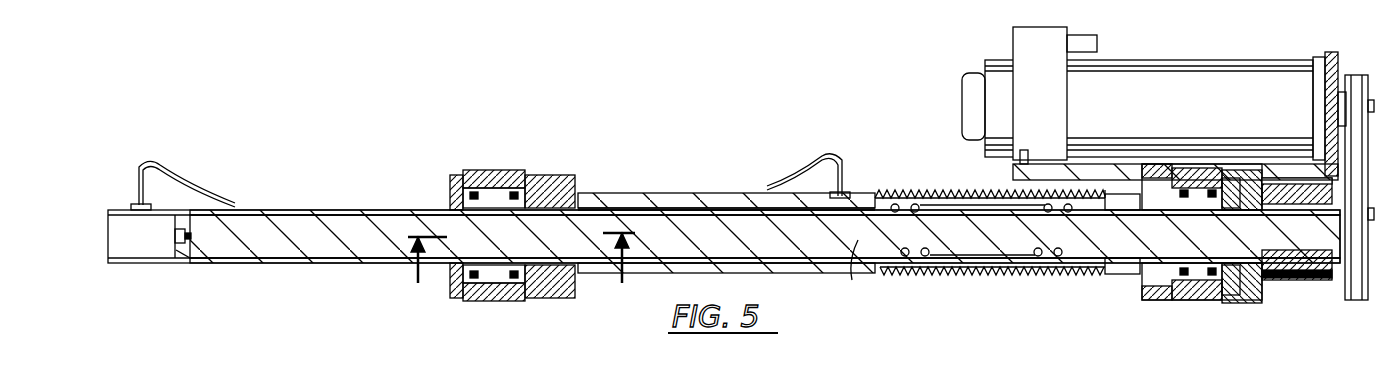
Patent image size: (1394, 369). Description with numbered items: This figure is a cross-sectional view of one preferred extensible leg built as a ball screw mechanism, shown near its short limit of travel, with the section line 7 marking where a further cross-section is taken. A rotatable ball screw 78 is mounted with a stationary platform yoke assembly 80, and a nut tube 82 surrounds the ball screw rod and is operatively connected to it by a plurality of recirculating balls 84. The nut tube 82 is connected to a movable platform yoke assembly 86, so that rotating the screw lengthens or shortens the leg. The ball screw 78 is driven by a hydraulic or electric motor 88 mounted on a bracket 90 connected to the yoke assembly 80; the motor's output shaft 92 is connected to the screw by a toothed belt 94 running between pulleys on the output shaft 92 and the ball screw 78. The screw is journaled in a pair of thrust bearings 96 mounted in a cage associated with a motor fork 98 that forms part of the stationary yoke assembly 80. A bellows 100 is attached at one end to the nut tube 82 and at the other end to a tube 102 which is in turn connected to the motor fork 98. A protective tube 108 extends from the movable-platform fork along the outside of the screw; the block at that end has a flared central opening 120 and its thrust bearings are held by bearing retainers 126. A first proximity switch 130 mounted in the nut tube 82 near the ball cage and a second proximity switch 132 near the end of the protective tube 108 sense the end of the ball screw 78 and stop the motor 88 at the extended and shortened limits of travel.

The section line 7- 7 is at (523, 267).
The ball screw 78 is at (855, 275).
The stationary platform yoke assembly 80 is at (1180, 305).
The nut tube 82 is at (630, 193).
The recirculating balls 84 is at (892, 205).
The movable platform yoke assembly 86 is at (502, 305).
The motor 88 is at (1240, 60).
The bracket 90 is at (1083, 168).
The output shaft 92 is at (1335, 105).
The toothed belt 94 is at (1366, 160).
The thrust bearings 96 is at (1285, 285).
The motor fork 98 is at (1238, 294).
The bellows 100 is at (1032, 275).
The tube 102 is at (1133, 262).
The protective tube 108 is at (255, 265).
The central opening 120 is at (849, 366).
The bearing retainers 126 is at (1062, 340).
The first proximity switch 130 is at (835, 185).
The second proximity switch 132 is at (135, 195).